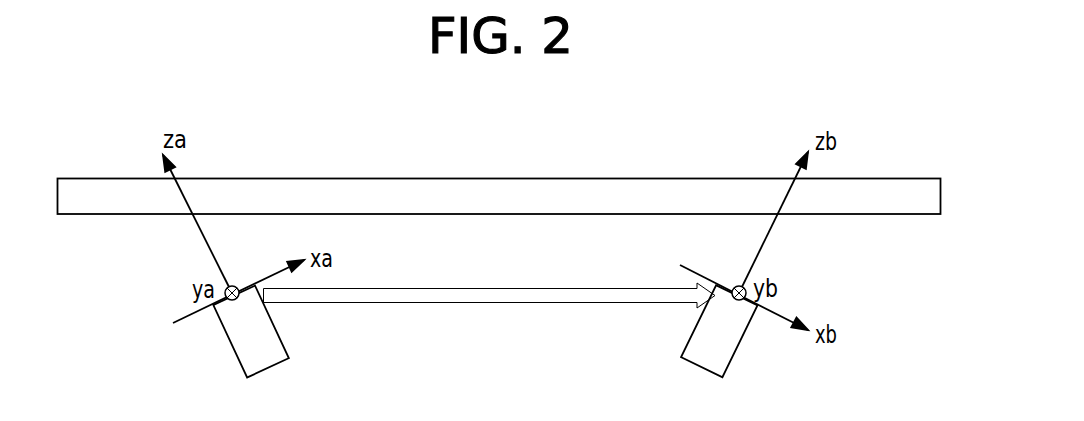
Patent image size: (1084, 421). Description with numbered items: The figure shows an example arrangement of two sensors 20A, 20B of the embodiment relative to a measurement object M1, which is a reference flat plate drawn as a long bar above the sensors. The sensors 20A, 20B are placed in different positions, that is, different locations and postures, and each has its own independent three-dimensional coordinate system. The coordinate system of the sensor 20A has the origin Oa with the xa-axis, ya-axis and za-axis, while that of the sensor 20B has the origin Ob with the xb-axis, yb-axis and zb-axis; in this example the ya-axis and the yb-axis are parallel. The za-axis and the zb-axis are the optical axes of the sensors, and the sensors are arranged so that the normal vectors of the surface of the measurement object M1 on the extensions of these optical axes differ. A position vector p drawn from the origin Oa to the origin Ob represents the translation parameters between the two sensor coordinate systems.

The measurement object M1 is at (858, 178).
The sensor 20A is at (232, 343).
The sensor 20B is at (739, 343).
The origin Oa is at (234, 286).
The origin Ob is at (738, 286).
The position vector p is at (490, 281).